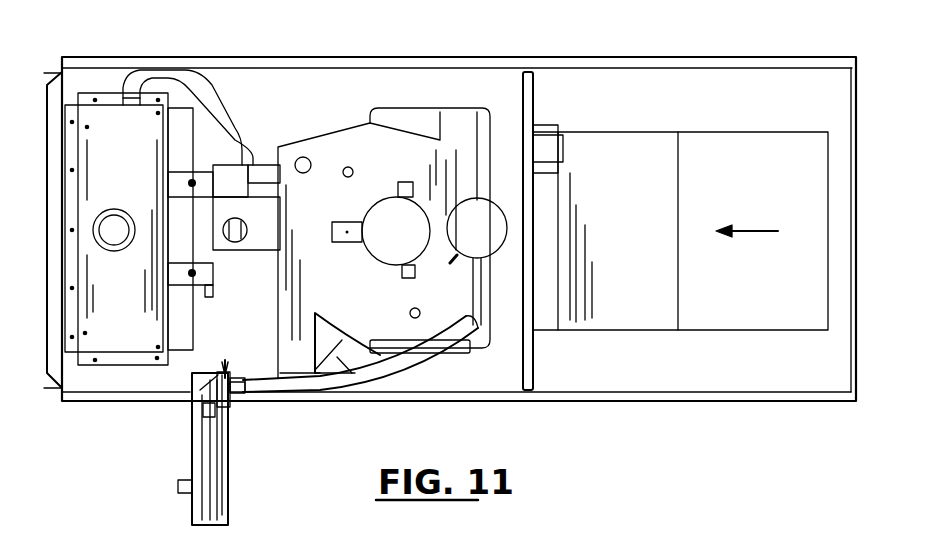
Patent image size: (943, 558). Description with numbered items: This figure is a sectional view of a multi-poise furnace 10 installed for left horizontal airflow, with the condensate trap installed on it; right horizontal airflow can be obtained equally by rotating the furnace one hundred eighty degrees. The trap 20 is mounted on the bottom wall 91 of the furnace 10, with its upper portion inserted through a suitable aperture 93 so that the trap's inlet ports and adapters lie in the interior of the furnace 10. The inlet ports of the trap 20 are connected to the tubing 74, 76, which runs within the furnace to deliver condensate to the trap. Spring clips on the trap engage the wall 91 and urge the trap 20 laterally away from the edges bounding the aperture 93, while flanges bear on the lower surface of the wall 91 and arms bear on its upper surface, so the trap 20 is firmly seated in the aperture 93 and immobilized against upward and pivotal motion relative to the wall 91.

The furnace 10 is at (300, 48).
The trap 20 is at (228, 458).
The tubing 74 is at (420, 357).
The tubing 76 is at (340, 350).
The bottom wall 91 is at (287, 403).
The aperture 93 is at (195, 388).